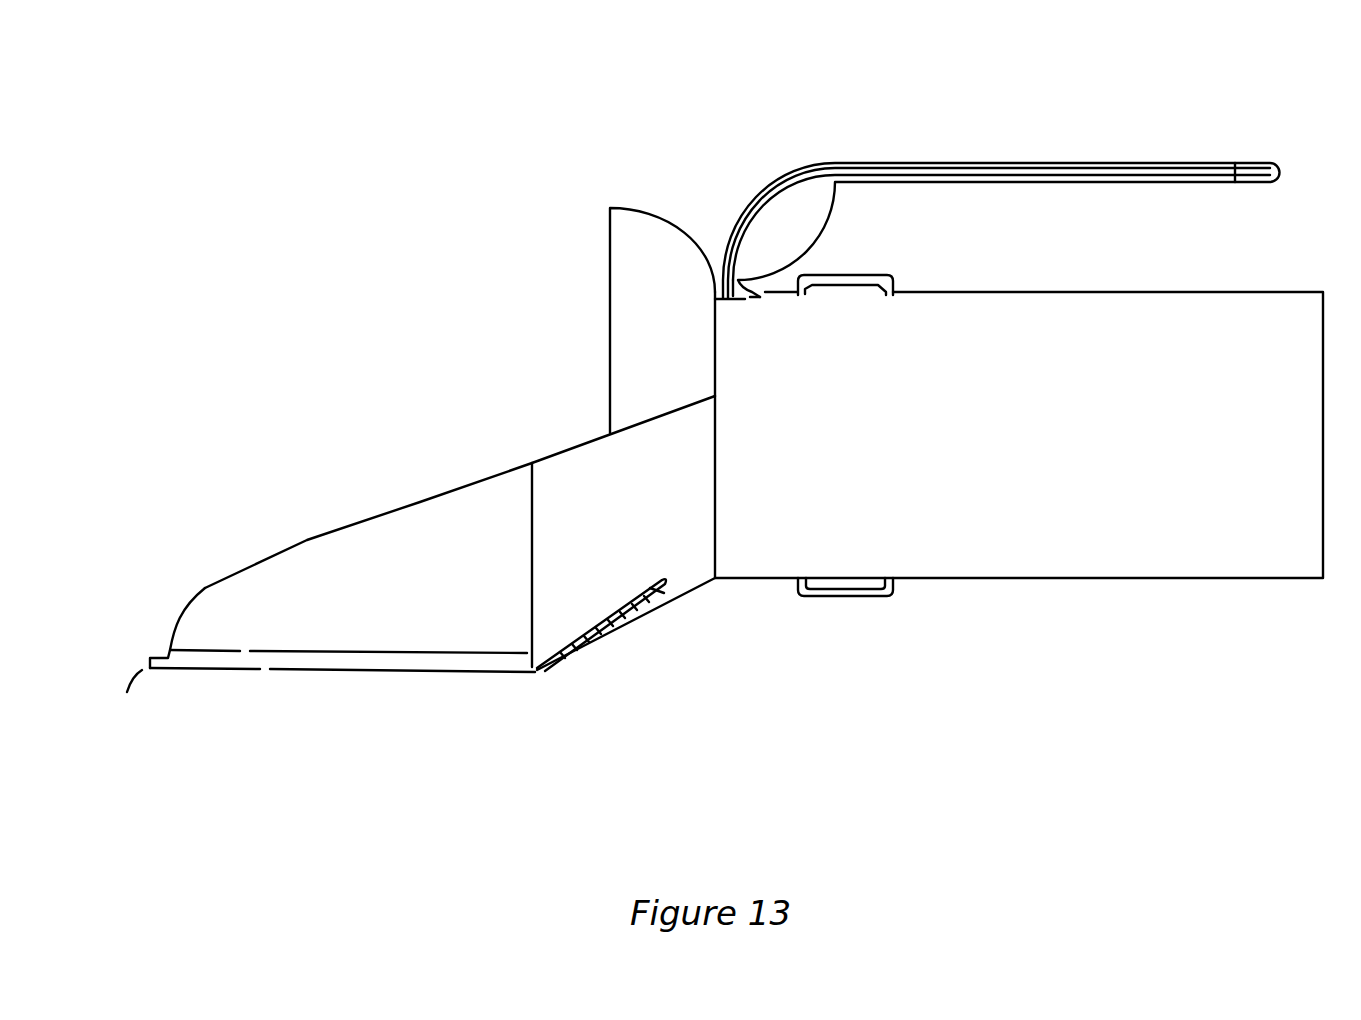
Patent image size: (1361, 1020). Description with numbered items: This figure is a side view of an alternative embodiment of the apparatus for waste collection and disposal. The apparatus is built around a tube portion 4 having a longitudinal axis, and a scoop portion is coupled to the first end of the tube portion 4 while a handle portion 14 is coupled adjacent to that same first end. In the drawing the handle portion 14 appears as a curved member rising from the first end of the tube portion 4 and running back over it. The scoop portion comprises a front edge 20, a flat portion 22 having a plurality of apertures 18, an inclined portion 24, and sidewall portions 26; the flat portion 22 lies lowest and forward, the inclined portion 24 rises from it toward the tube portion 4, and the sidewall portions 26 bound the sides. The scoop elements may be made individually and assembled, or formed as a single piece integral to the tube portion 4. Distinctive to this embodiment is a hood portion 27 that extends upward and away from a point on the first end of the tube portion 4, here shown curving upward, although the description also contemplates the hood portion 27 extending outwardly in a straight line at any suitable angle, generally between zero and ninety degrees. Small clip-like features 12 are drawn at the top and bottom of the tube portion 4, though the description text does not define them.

The tube portion 4 is at (1080, 606).
The clip 12 is at (848, 268).
The handle portion 14 is at (937, 122).
The apertures 18 is at (636, 618).
The front edge 20 is at (109, 697).
The flat portion 22 is at (217, 652).
The inclined portion 24 is at (565, 493).
The sidewall portions 26 is at (365, 620).
The hood portion 27 is at (627, 292).